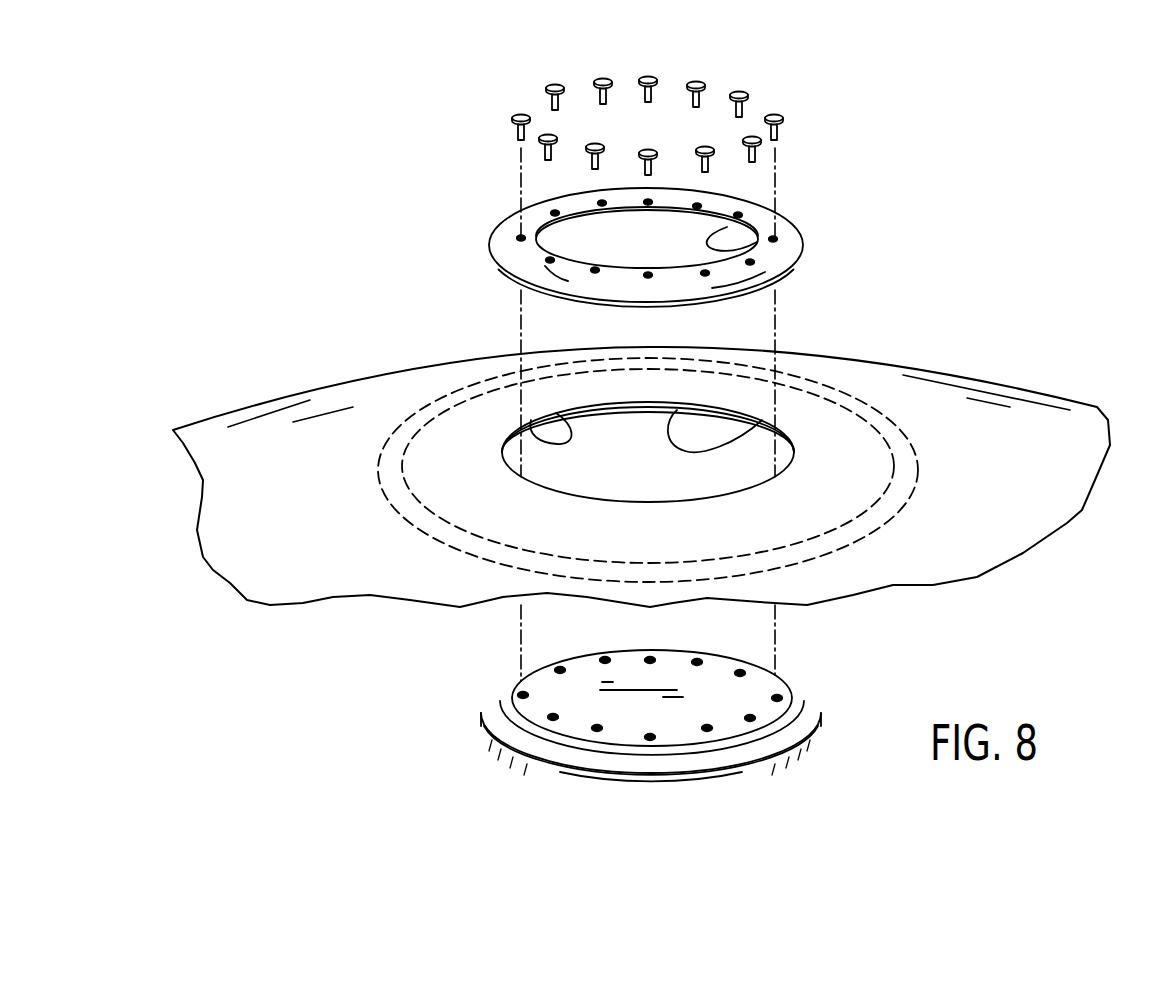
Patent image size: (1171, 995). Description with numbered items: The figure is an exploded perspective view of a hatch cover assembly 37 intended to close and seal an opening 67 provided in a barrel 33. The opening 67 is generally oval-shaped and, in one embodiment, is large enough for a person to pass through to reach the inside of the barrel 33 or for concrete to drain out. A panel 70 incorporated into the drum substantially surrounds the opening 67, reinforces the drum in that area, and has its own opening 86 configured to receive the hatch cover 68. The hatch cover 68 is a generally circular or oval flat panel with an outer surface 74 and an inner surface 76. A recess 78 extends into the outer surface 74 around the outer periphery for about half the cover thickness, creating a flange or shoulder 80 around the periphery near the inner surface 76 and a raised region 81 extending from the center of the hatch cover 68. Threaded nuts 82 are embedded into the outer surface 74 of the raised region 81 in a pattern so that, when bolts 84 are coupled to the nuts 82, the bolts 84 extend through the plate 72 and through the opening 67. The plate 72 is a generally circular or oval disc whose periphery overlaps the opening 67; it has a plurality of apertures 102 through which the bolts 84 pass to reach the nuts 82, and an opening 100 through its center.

The barrel 33 is at (1017, 435).
The hatch cover assembly 37 is at (882, 172).
The opening 67 is at (762, 420).
The hatch cover 68 is at (543, 777).
The panel 70 is at (453, 460).
The plate 72 is at (487, 242).
The outer surface 74 is at (547, 697).
The inner surface 76 is at (653, 788).
The recess 78 is at (803, 700).
The shoulder 80 is at (820, 717).
The raised region 81 is at (620, 697).
The threaded nuts 82 is at (707, 728).
The bolts 84 is at (655, 79).
The opening 86 is at (553, 415).
The opening 100 is at (757, 242).
The apertures 102 is at (550, 260).